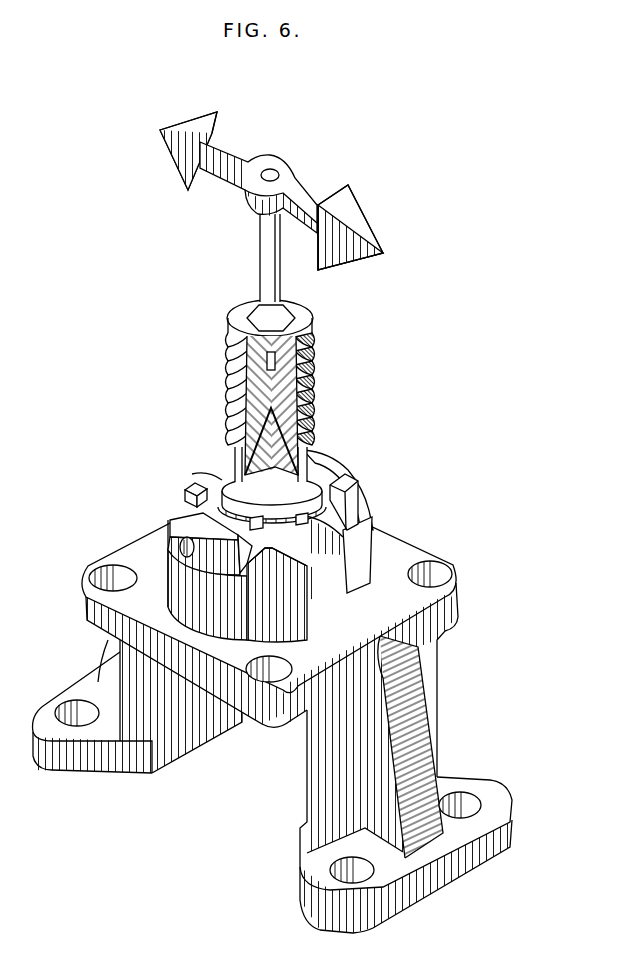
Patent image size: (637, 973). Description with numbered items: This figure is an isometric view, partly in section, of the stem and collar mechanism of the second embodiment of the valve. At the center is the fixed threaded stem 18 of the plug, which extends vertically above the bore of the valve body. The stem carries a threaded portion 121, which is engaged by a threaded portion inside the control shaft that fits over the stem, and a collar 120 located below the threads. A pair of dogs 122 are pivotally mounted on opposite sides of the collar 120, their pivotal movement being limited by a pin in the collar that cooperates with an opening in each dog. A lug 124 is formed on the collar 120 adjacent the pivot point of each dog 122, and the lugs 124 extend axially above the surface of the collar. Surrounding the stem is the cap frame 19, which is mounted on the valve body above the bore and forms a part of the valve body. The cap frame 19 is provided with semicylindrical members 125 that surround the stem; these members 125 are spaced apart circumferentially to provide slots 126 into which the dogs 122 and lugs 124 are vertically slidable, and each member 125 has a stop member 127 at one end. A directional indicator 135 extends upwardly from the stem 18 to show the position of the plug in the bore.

The cap frame 19 is at (460, 596).
The threaded stem 18 is at (254, 394).
The threaded portion 121 is at (313, 369).
The collar 120 is at (224, 478).
The dogs 122 is at (328, 456).
The lugs 124 is at (193, 485).
The semicylindrical members 125 is at (175, 568).
The slots 126 is at (312, 617).
The stop member 127 is at (298, 568).
The directional indicator 135 is at (310, 198).